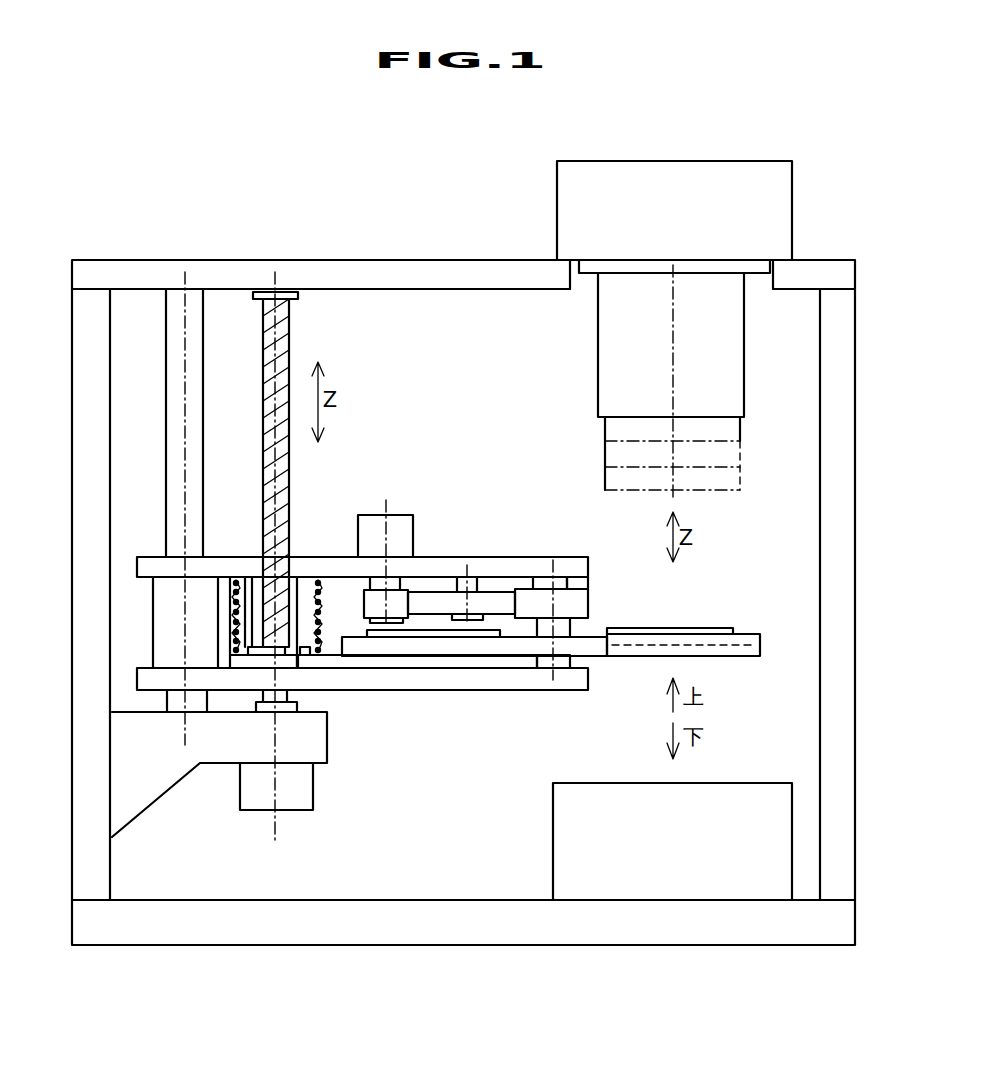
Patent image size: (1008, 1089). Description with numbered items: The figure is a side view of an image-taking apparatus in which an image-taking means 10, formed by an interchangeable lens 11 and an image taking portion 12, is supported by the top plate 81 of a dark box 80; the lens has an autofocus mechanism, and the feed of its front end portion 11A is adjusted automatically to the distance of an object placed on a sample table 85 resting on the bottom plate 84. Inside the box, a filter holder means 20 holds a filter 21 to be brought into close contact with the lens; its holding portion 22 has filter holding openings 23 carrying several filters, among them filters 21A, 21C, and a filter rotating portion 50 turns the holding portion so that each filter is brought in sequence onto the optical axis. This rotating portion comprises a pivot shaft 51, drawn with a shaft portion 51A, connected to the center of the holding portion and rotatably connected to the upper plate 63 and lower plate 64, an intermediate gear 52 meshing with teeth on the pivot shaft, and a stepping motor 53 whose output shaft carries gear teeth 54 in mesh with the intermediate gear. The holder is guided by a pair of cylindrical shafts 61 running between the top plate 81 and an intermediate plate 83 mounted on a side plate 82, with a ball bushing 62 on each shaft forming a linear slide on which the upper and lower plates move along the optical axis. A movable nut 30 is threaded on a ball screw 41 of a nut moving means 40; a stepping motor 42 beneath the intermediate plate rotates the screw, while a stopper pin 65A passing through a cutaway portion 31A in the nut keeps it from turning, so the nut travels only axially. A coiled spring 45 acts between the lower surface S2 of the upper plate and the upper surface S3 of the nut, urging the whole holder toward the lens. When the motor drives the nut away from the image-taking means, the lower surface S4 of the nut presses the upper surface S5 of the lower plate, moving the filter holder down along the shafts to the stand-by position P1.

The image-taking means 10 is at (701, 316).
The interchangeable lens 11 is at (740, 382).
The front end portion 11A is at (736, 442).
The image taking portion 12 is at (782, 210).
The filter holder means 20 is at (415, 405).
The filter 21 is at (552, 606).
The filter 21A is at (670, 615).
The filter 21C is at (503, 632).
The holding portion 22 is at (750, 650).
The filter holding opening 23 is at (614, 649).
The movable nut 30 is at (325, 660).
The cutaway portion 31A is at (303, 673).
The nut moving means 40 is at (293, 568).
The ball screw 41 is at (272, 452).
The stepping motor 42 is at (305, 797).
The coiled spring 45 is at (327, 596).
The filter rotating portion 50 is at (583, 478).
The pivot shaft 51 is at (565, 582).
The guide block 51A is at (537, 594).
The intermediate gear 52 is at (480, 566).
The stepping motor 53 is at (403, 525).
The gear teeth 54 is at (400, 590).
The cylindrical shaft 61 is at (195, 378).
The ball bushing 62 is at (158, 590).
The upper plate 63 is at (230, 560).
The lower plate 64 is at (478, 700).
The stopper pin 65A is at (293, 590).
The dark box 80 is at (218, 258).
The top plate 81 is at (472, 268).
The side plate 82 is at (100, 512).
The intermediate plate 83 is at (150, 788).
The bottom plate 84 is at (478, 917).
The sample table 85 is at (565, 822).
The lower surface of the upper plate S2 is at (589, 583).
The upper surface of the movable nut S3 is at (323, 645).
The lower surface of the movable nut S4 is at (318, 673).
The upper surface of the lower plate S5 is at (586, 664).
The stand-by position P1 is at (795, 648).